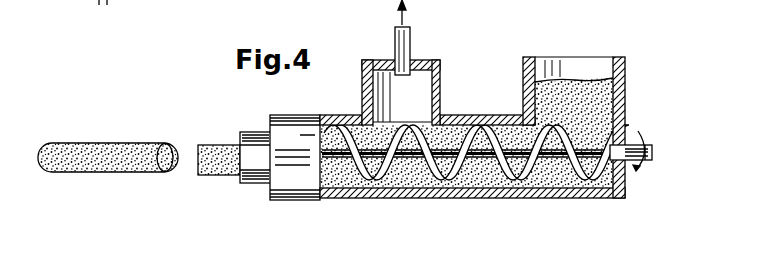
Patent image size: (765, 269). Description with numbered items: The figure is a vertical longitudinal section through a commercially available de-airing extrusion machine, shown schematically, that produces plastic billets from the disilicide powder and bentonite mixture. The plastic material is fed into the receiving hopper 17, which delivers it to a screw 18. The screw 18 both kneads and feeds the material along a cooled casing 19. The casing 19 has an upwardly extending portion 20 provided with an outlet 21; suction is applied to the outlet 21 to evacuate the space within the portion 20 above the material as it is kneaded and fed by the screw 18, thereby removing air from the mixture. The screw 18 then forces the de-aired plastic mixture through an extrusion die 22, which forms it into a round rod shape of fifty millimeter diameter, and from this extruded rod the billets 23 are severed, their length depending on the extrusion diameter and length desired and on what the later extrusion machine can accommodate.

The receiving hopper 17 is at (625, 80).
The screw 18 is at (470, 157).
The cooled casing 19 is at (474, 147).
The upwardly extending portion 20 is at (440, 68).
The outlet 21 is at (406, 38).
The extrusion die 22 is at (255, 184).
The billets 23 is at (133, 173).